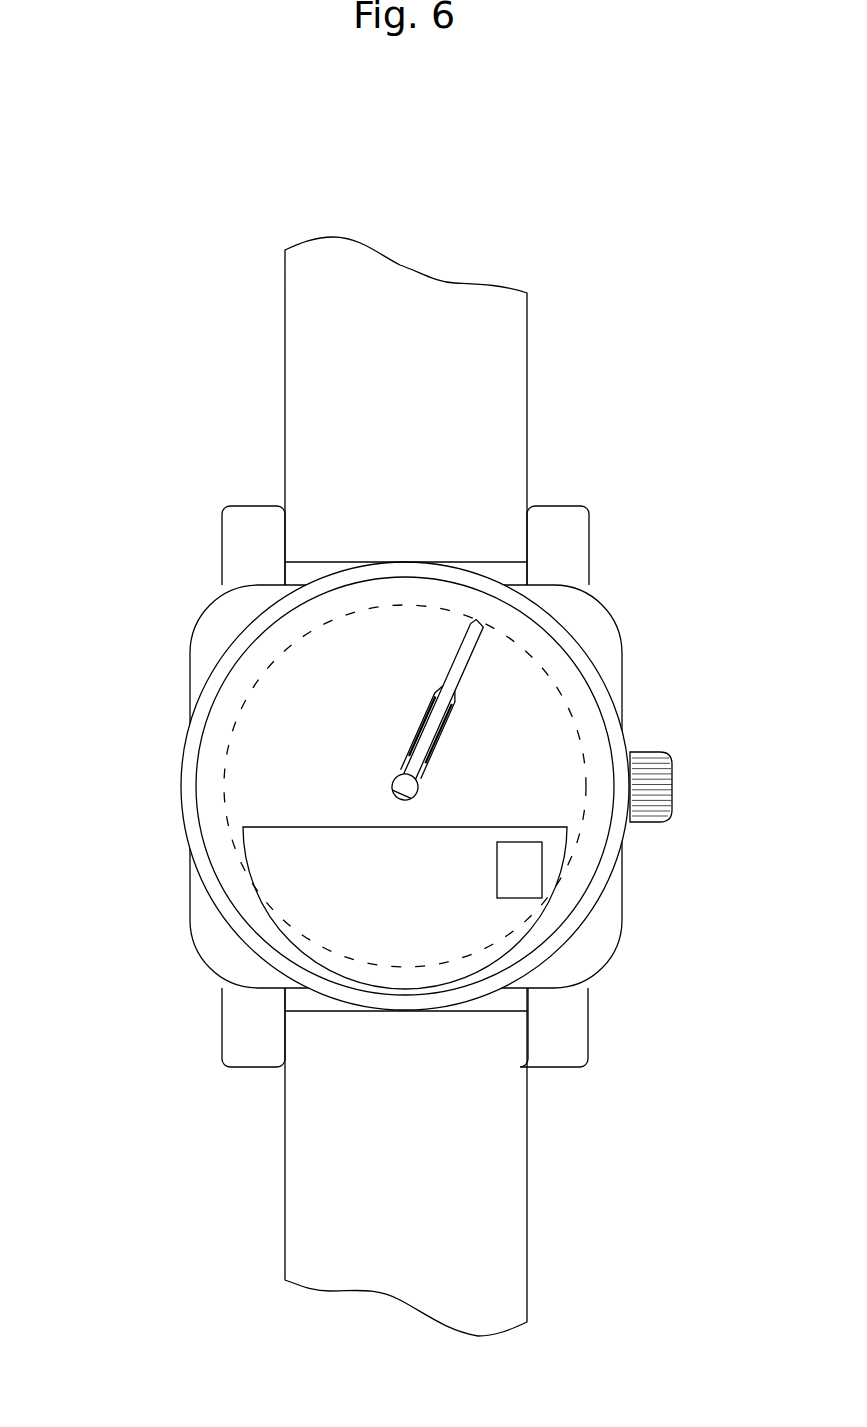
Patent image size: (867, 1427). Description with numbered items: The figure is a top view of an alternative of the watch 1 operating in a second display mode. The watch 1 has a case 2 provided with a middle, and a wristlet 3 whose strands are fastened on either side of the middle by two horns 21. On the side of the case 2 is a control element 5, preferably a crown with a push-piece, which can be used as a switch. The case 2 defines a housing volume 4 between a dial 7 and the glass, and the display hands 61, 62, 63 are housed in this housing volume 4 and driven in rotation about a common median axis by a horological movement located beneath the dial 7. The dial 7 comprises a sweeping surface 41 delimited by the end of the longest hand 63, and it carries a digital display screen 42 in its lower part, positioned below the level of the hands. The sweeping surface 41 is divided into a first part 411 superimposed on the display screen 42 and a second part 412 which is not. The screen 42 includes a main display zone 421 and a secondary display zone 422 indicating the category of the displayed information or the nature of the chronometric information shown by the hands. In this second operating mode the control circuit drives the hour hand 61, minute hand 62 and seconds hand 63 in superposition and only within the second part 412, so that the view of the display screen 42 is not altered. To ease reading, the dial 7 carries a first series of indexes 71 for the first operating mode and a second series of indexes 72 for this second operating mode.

The watch 1 is at (686, 330).
The case 2 is at (181, 770).
The horns 21 is at (255, 527).
The wristlet 3 is at (338, 411).
The housing volume 4 is at (590, 748).
The sweeping surface 41 is at (575, 717).
The digital display screen 42 is at (565, 840).
The first part of the sweeping surface 411 is at (355, 912).
The second part of the sweeping surface 412 is at (278, 786).
The main display zone 421 is at (277, 843).
The secondary display zone 422 is at (530, 917).
The control element 5 is at (657, 785).
The hour hand 61 is at (408, 750).
The minute hand 62 is at (433, 702).
The seconds hand 63 is at (462, 667).
The dial 7 is at (557, 665).
The first series of indexes 71 is at (505, 618).
The second series of indexes 72 is at (488, 648).